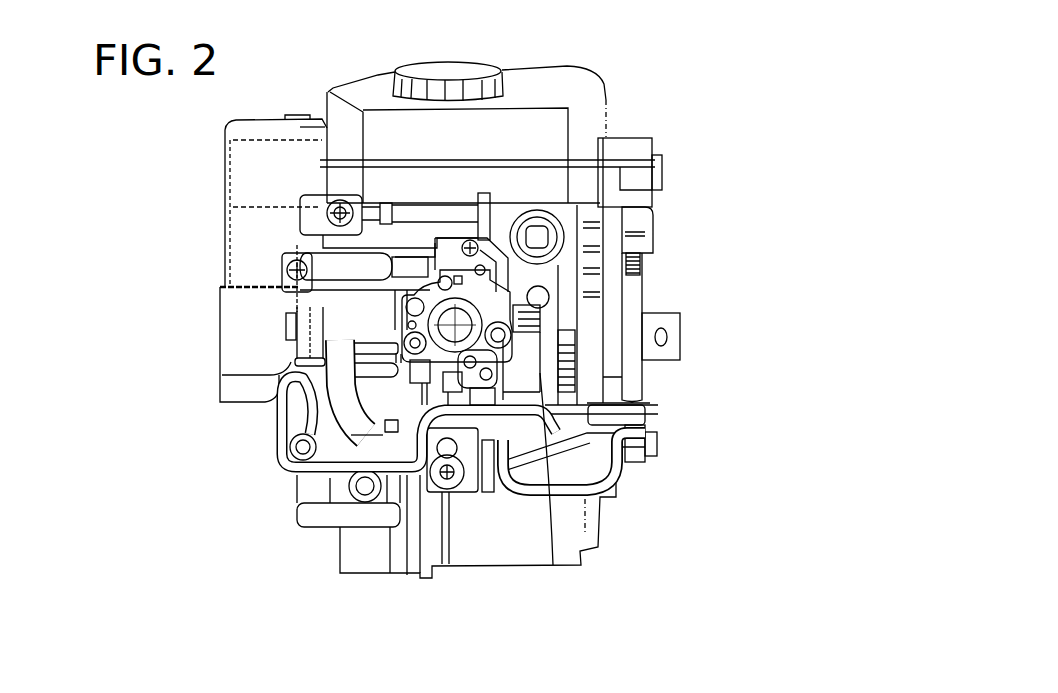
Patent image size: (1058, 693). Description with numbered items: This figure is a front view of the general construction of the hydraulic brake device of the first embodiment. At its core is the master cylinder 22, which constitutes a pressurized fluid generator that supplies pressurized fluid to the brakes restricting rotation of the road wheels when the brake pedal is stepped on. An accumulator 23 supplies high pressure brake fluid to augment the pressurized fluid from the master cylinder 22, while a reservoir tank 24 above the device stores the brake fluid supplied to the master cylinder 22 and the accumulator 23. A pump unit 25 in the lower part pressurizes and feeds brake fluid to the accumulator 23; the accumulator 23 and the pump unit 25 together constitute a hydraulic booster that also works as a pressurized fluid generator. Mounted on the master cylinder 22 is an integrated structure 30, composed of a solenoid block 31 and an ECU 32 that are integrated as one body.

The master cylinder 22 is at (298, 307).
The accumulator 23 is at (230, 235).
The reservoir tank 24 is at (515, 82).
The pump unit 25 is at (510, 548).
The integrated structure 30 is at (662, 281).
The solenoid block 31 is at (553, 565).
The ECU 32 is at (642, 302).